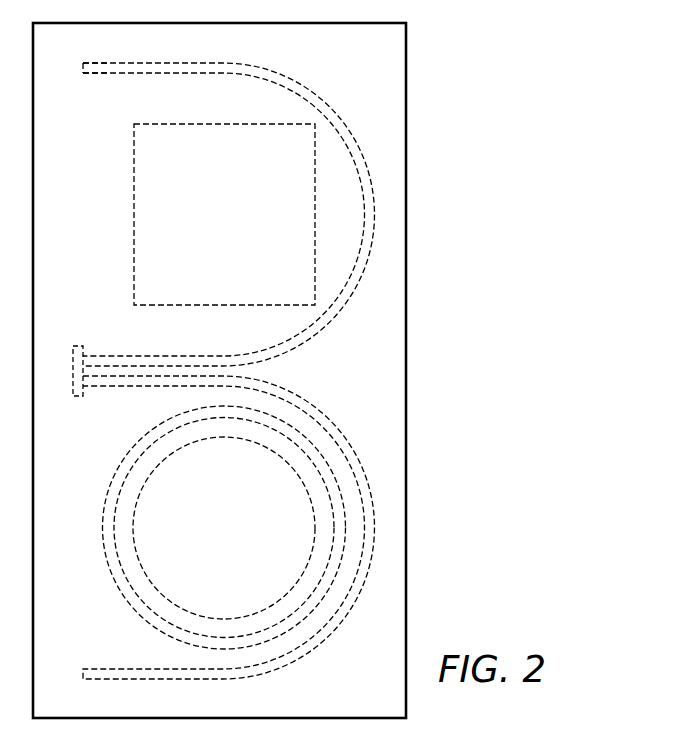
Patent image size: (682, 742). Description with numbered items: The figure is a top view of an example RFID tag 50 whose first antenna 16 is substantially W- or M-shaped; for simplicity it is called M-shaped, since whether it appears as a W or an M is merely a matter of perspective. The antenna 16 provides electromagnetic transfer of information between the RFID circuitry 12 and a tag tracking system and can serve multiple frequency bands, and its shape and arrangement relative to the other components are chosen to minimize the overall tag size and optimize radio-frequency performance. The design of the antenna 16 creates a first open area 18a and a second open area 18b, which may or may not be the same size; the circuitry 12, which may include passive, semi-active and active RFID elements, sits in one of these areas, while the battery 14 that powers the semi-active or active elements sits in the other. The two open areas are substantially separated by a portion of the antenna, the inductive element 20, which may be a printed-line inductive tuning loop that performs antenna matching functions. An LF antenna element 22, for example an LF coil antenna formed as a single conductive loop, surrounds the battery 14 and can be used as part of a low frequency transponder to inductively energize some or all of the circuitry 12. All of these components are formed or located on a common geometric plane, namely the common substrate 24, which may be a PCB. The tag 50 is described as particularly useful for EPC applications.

The circuitry 12 is at (238, 228).
The battery 14 is at (238, 541).
The antenna 16 is at (107, 76).
The first open area 18a is at (335, 215).
The second open area 18b is at (355, 527).
The inductive element 20 is at (73, 354).
The LF antenna element 22 is at (103, 530).
The substrate 24 is at (407, 346).
The RFID tag 50 is at (467, 100).